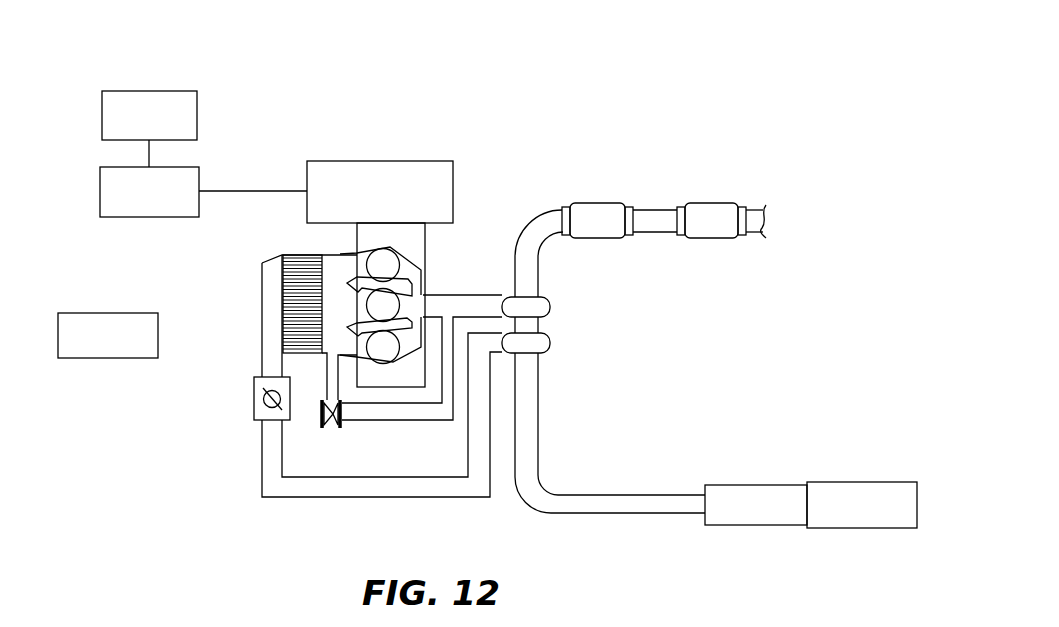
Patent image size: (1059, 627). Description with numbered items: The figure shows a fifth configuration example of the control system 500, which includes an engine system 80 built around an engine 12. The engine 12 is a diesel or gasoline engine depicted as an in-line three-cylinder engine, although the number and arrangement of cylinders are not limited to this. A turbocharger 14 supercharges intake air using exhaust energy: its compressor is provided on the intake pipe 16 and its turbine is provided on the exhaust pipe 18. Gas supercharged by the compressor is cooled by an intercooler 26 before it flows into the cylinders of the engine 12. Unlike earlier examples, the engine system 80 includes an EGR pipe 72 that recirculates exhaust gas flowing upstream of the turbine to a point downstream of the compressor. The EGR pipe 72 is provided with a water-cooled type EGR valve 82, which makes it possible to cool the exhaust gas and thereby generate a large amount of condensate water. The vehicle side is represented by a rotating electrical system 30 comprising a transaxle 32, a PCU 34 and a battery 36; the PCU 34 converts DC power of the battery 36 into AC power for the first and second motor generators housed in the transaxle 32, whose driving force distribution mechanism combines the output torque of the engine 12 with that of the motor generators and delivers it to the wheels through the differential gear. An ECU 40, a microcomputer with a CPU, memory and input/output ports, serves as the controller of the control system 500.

The control system 500 is at (728, 127).
The engine 12 is at (439, 292).
The turbocharger 14 is at (558, 322).
The intake pipe 16 is at (590, 493).
The exhaust pipe 18 is at (521, 228).
The intercooler 26 is at (283, 322).
The rotating electrical system 30 is at (262, 150).
The transaxle 32 is at (410, 161).
The PCU 34 is at (100, 185).
The battery 36 is at (102, 100).
The ECU 40 is at (58, 333).
The EGR pipe 72 is at (420, 421).
The engine system 80 is at (201, 486).
The EGR valve 82 is at (328, 428).